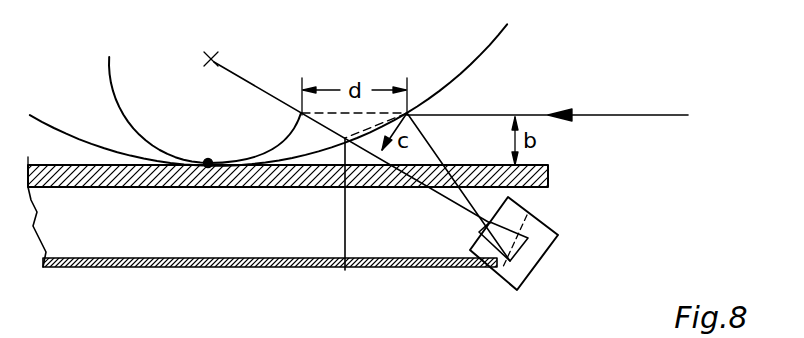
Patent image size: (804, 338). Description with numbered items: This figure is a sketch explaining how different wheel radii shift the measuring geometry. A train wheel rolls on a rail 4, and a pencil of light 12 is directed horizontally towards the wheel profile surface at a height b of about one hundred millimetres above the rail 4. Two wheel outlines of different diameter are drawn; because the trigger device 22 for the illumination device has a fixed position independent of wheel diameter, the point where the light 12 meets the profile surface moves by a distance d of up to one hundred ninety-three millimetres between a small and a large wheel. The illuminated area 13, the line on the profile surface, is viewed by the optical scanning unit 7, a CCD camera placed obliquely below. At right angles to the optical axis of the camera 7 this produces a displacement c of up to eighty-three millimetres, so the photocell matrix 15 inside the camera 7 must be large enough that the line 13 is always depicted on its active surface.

The rail 4 is at (77, 232).
The trigger device 22 is at (207, 210).
The illuminated area 13 is at (345, 270).
The light 12 is at (507, 115).
The optical scanning unit 7 is at (562, 216).
The photocell matrix 15 is at (526, 250).